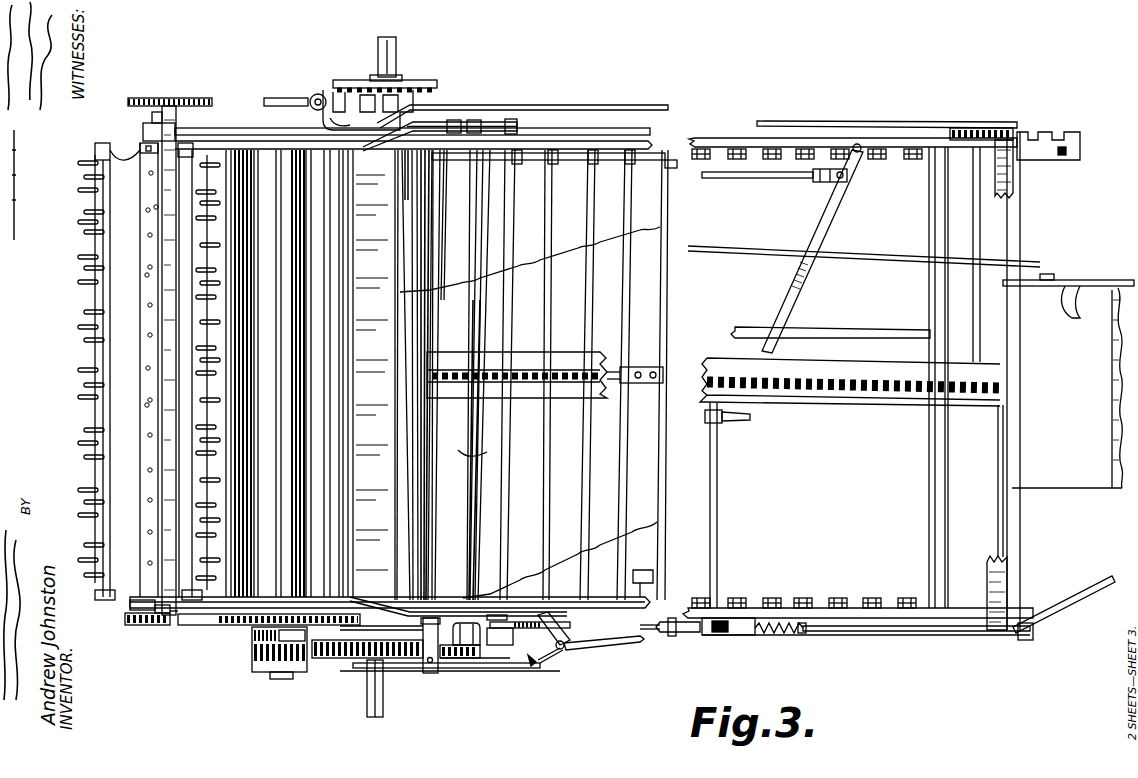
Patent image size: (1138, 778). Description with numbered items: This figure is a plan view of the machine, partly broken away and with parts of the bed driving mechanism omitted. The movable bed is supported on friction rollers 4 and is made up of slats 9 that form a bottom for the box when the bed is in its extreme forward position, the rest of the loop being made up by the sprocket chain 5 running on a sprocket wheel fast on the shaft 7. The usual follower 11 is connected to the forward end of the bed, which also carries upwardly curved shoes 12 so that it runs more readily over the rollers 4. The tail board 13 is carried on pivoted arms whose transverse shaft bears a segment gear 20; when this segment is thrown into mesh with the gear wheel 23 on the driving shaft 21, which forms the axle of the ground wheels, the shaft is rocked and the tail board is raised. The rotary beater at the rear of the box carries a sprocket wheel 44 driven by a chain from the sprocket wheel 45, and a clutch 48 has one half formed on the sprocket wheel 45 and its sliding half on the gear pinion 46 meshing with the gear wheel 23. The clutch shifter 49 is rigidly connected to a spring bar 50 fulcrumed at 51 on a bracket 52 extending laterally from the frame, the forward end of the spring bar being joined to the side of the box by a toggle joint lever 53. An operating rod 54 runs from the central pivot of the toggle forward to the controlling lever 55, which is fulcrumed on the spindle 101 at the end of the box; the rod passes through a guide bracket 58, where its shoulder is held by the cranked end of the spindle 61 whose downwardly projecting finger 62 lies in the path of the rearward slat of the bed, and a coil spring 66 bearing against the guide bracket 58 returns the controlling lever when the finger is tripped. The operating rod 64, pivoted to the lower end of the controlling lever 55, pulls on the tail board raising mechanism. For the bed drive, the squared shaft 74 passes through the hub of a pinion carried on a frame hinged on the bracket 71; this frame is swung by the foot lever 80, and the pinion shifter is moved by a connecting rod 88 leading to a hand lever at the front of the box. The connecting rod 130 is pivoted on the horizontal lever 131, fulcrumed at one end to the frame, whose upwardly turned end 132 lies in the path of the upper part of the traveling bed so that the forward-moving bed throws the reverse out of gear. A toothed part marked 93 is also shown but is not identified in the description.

The toothed bracket bar 93 is at (183, 98).
The squared shaft 74 is at (283, 98).
The coil spring 66 is at (413, 83).
The bracket 71 is at (413, 106).
The connecting rod 88 is at (573, 106).
The tail board 13 is at (240, 147).
The sprocket wheel 45 is at (100, 360).
The follower 11 is at (660, 227).
The upwardly curved shoes 12 is at (578, 553).
The slats 9 is at (640, 470).
The shaft 7 is at (975, 330).
The connecting rod 130 is at (757, 178).
The horizontal lever 131 is at (827, 227).
The upwardly turned end 132 is at (767, 333).
The foot lever 80 is at (1097, 280).
The rock-shaft or spindle 101 is at (1022, 438).
The sprocket chain 5 is at (843, 392).
The spindle 61 is at (718, 491).
The finger 62 is at (732, 423).
The friction rollers 4 is at (767, 600).
The operating rod 64 is at (923, 632).
The guide bracket 58 is at (735, 636).
The controlling lever 55 is at (1077, 600).
The operating rod 54 is at (657, 633).
The sprocket wheel 44 is at (133, 628).
The clutch 48 is at (252, 645).
The gear pinion 46 is at (257, 667).
The clutch shifter 49 is at (317, 667).
The driving shaft 21 is at (384, 703).
The gear wheel 23 is at (403, 670).
The fulcrum 51 is at (440, 673).
The spring bar 50 is at (457, 670).
The segment gear 20 is at (470, 675).
The bracket 52 is at (530, 677).
The toggle joint lever 53 is at (607, 647).